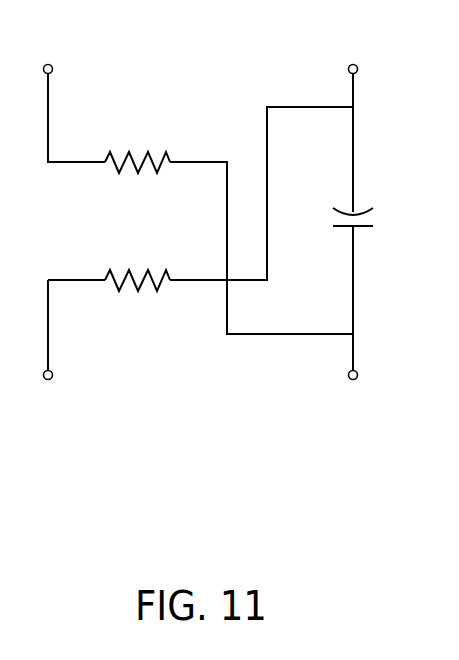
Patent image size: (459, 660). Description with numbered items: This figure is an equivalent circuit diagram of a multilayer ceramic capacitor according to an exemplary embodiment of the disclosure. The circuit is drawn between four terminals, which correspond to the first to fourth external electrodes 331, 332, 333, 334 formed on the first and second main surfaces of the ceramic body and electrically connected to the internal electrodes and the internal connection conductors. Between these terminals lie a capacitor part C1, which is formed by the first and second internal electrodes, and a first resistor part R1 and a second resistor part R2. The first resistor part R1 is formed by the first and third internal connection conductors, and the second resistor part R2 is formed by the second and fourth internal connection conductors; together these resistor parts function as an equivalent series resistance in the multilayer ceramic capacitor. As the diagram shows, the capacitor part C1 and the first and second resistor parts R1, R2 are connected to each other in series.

The first external electrode 331 is at (48, 50).
The second external electrode 332 is at (354, 51).
The third external electrode 333 is at (48, 391).
The fourth external electrode 334 is at (354, 392).
The first resistor part R1 is at (137, 177).
The second resistor part R2 is at (137, 295).
The capacitor part C1 is at (372, 220).